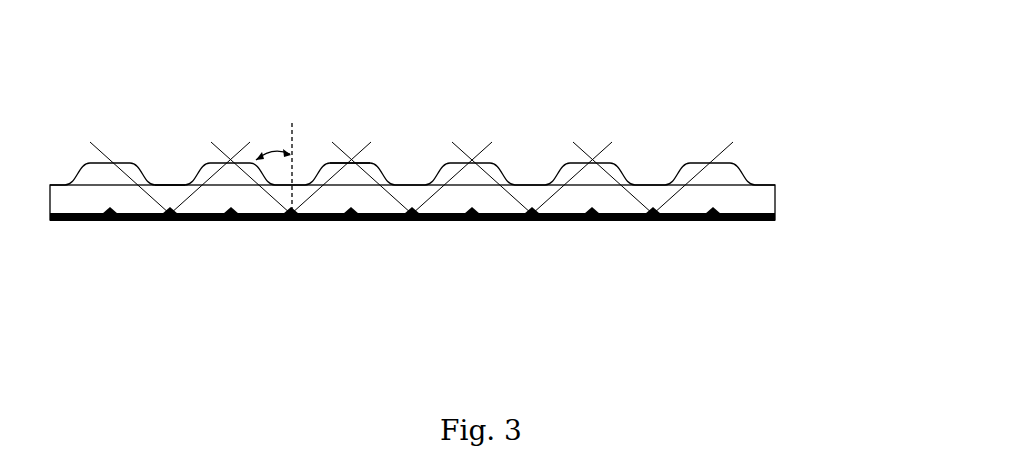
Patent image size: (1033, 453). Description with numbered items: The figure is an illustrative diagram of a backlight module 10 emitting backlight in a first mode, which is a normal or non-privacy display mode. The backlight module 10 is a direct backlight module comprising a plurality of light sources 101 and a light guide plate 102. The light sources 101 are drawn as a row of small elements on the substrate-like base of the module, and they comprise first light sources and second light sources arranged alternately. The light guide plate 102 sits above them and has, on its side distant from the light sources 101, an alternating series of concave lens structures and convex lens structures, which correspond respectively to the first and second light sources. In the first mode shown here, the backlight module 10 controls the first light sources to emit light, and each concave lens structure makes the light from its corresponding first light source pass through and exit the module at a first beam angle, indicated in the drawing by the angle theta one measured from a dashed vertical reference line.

The backlight module 10 is at (567, 315).
The light sources 101 is at (406, 302).
The light guide plate 102 is at (755, 195).